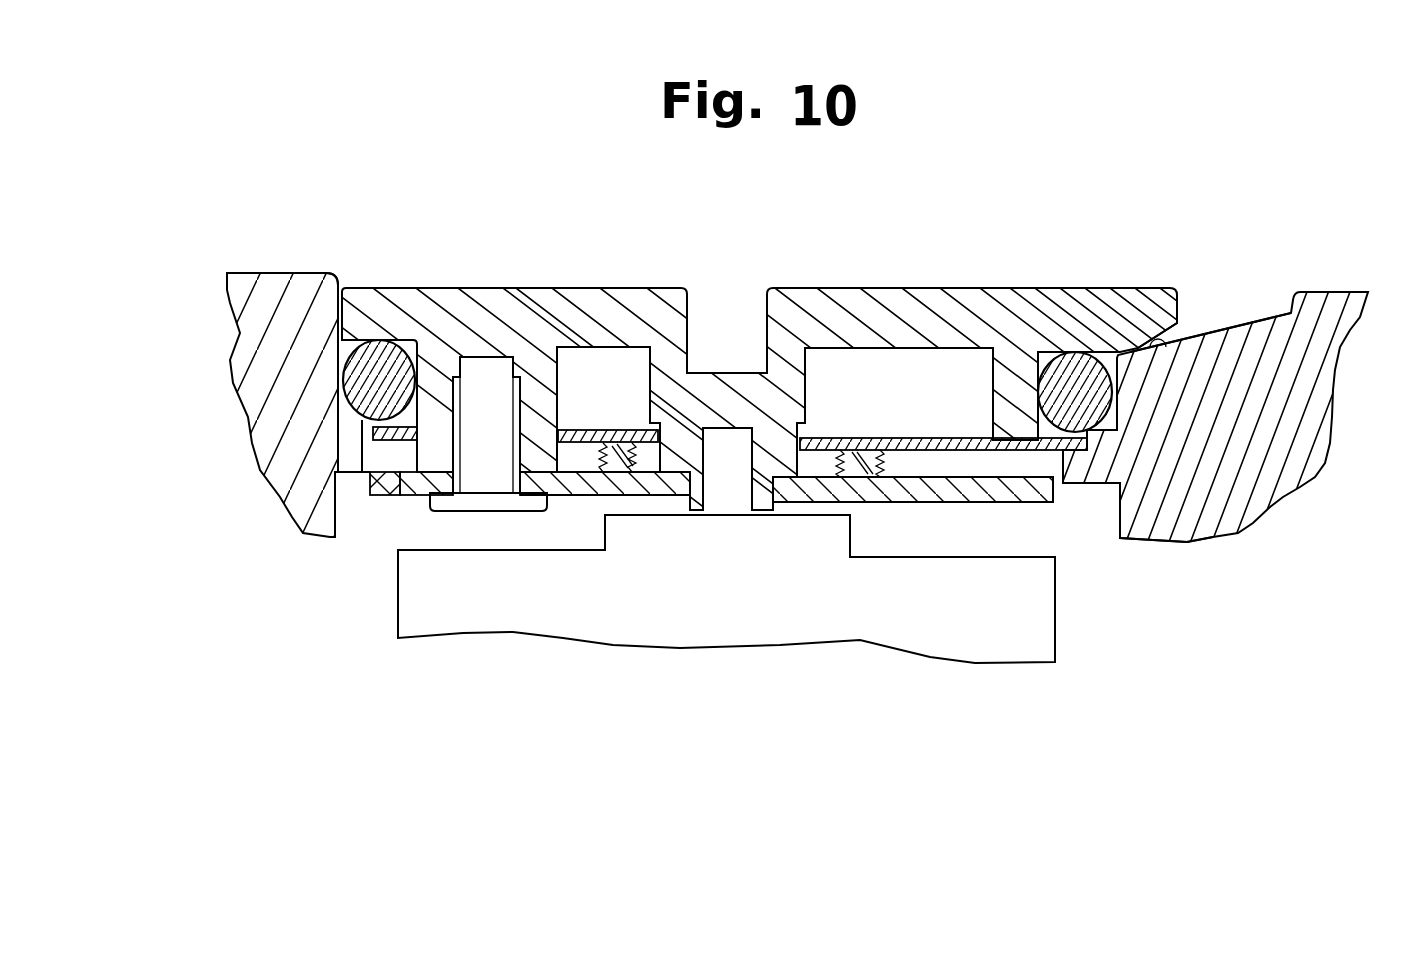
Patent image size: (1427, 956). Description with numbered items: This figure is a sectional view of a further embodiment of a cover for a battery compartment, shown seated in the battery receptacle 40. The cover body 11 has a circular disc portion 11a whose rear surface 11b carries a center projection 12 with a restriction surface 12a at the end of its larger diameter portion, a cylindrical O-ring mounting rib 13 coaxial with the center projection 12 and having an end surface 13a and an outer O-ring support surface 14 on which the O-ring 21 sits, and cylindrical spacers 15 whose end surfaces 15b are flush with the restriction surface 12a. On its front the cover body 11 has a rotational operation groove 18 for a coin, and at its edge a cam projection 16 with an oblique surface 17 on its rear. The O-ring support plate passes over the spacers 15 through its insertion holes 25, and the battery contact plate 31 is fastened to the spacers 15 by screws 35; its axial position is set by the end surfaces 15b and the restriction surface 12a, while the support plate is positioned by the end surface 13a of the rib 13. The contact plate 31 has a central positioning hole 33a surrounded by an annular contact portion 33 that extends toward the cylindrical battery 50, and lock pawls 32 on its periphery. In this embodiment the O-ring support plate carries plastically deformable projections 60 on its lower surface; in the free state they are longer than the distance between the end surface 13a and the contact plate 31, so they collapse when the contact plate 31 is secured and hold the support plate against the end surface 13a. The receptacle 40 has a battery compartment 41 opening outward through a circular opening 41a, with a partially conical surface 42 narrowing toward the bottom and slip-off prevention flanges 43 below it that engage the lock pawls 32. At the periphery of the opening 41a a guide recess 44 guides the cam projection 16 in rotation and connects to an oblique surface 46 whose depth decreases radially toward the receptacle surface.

The cover body 11 is at (891, 283).
The circular disc portion 11a is at (612, 299).
The rear surface 11b is at (385, 340).
The center projection 12 is at (787, 402).
The restriction surface 12a is at (778, 478).
The O-ring mounting rib 13 is at (1008, 440).
The end surface 13a is at (1060, 495).
The O-ring support surface 14 is at (420, 355).
The cylindrical spacers 15 is at (430, 467).
The end surfaces 15b is at (541, 505).
The cam projection 16 is at (1140, 325).
The oblique surface 17 is at (1190, 338).
The rotational operation groove 18 is at (755, 325).
The O-ring 21 is at (395, 345).
The insertion holes 25 is at (552, 436).
The battery contact plate 31 is at (641, 496).
The lock pawls 32 is at (353, 502).
The annular contact portion 33 is at (778, 478).
The positioning hole 33a is at (695, 505).
The screws 35 is at (472, 505).
The battery receptacle 40 is at (257, 323).
The battery compartment 41 is at (330, 543).
The circular opening 41a is at (350, 322).
The partially conical surface 42 is at (357, 403).
The slip-off prevention flanges 43 is at (1100, 483).
The guide recess 44 is at (1165, 358).
The oblique surface 46 is at (1320, 345).
The cylindrical battery 50 is at (1040, 627).
The plastically deformable projections 60 is at (610, 472).